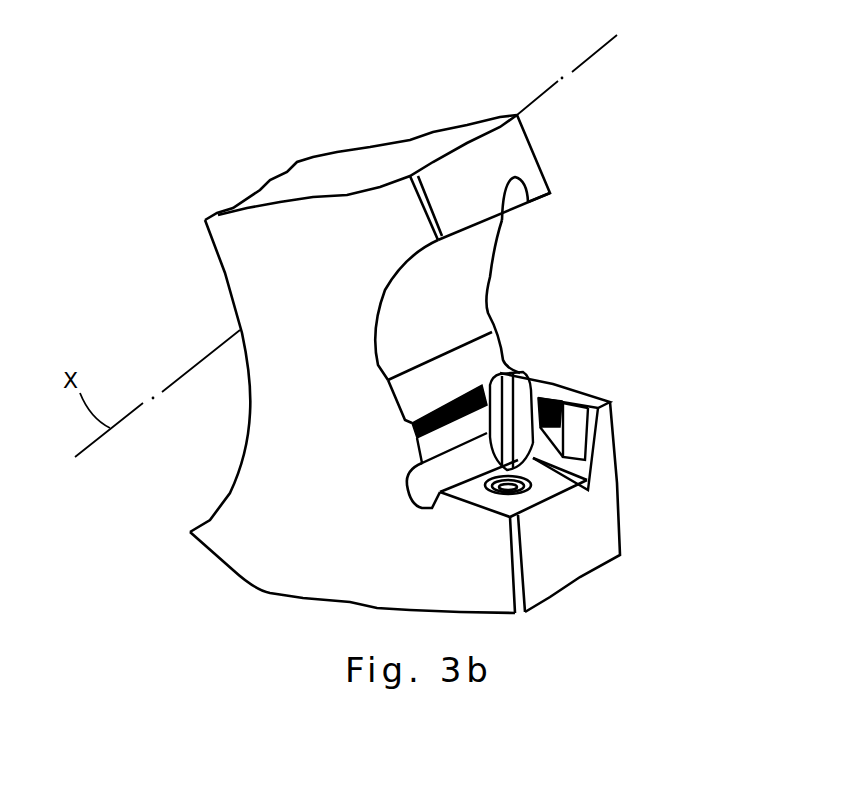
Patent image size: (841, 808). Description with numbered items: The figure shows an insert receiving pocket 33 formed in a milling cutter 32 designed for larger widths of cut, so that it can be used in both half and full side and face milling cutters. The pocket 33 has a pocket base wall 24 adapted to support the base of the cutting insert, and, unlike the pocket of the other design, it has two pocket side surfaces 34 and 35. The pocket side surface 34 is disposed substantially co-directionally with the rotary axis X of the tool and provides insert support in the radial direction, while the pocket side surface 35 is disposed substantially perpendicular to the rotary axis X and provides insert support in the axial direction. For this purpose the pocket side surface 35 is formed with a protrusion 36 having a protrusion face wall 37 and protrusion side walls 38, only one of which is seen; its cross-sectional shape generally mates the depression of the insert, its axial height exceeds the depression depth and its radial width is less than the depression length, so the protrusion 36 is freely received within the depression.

The pocket base wall 24 is at (548, 483).
The milling cutter 32 is at (258, 283).
The insert receiving pocket 33 is at (575, 352).
The pocket side surface 34 is at (405, 438).
The pocket side surface 35 is at (525, 405).
The protrusion 36 is at (558, 397).
The protrusion face wall 37 is at (560, 422).
The protrusion side walls 38 is at (567, 430).